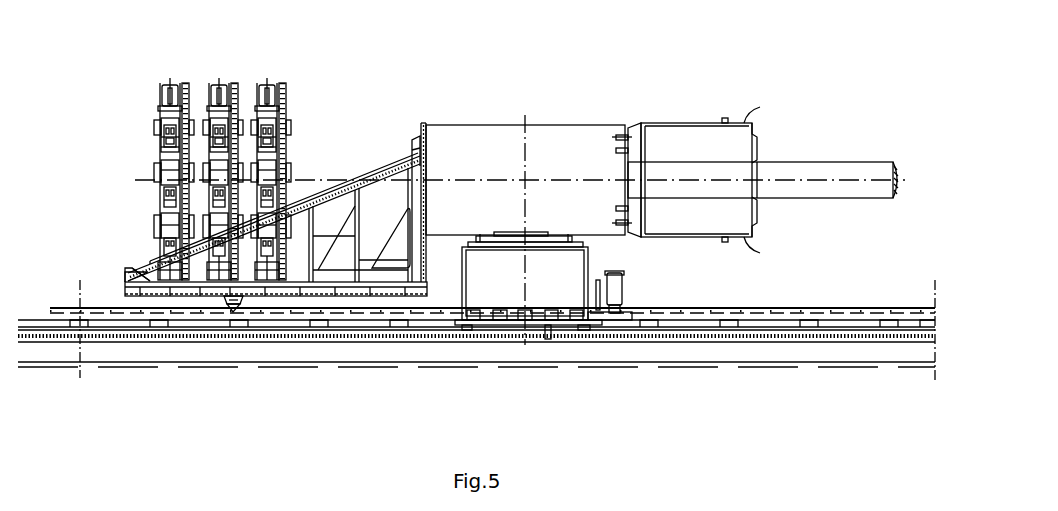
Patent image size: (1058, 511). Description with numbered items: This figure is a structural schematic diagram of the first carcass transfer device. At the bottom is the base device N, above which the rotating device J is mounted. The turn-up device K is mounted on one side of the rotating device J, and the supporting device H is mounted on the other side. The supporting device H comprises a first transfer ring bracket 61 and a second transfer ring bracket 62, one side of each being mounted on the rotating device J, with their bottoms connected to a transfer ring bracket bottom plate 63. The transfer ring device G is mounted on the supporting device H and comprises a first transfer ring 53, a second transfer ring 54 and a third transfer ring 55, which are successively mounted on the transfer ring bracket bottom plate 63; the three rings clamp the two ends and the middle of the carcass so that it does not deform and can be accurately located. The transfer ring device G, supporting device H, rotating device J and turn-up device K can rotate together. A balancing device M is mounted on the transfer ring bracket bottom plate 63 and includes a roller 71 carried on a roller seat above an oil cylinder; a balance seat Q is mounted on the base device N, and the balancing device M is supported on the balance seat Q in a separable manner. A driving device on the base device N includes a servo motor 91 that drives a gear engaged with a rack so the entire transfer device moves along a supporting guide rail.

The first transfer ring 53 is at (171, 84).
The second transfer ring 54 is at (221, 84).
The third transfer ring 55 is at (272, 84).
The transfer ring device G is at (222, 188).
The supporting device H is at (165, 288).
The balancing device M is at (293, 203).
The first transfer ring bracket 61 is at (413, 148).
The second transfer ring bracket 62 is at (423, 202).
The rotating device J is at (540, 237).
The turn-up device K is at (677, 138).
The balance seat Q is at (138, 309).
The roller 71 is at (238, 290).
The transfer ring bracket bottom plate 63 is at (333, 288).
The base device N is at (505, 292).
The servo motor 91 is at (618, 300).